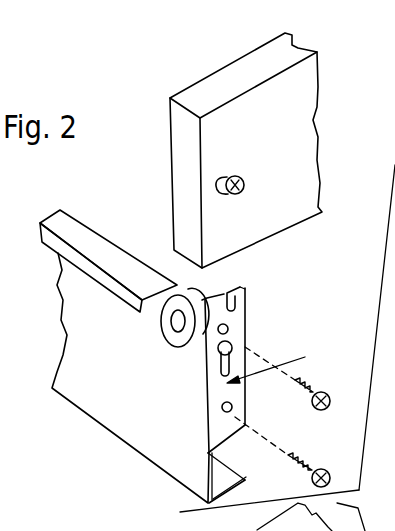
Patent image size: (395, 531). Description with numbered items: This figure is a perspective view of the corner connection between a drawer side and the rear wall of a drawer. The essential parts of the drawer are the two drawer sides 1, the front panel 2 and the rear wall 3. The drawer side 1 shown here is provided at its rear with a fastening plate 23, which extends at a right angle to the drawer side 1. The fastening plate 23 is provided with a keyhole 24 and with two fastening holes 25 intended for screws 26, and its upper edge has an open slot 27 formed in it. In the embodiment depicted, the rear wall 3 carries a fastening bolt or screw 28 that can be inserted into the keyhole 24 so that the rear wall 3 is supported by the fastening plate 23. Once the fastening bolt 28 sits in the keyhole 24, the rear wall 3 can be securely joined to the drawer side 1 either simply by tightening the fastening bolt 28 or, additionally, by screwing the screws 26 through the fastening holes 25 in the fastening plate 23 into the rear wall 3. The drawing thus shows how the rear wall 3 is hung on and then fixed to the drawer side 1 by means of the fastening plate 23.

The drawer side 1 is at (127, 412).
The front panel 2 is at (287, 338).
The rear wall 3 is at (297, 180).
The fastening plate 23 is at (282, 359).
The keyhole 24 is at (229, 344).
The fastening holes 25 is at (228, 326).
The screws 26 is at (329, 399).
The open slot 27 is at (245, 292).
The fastening bolt 28 is at (242, 180).